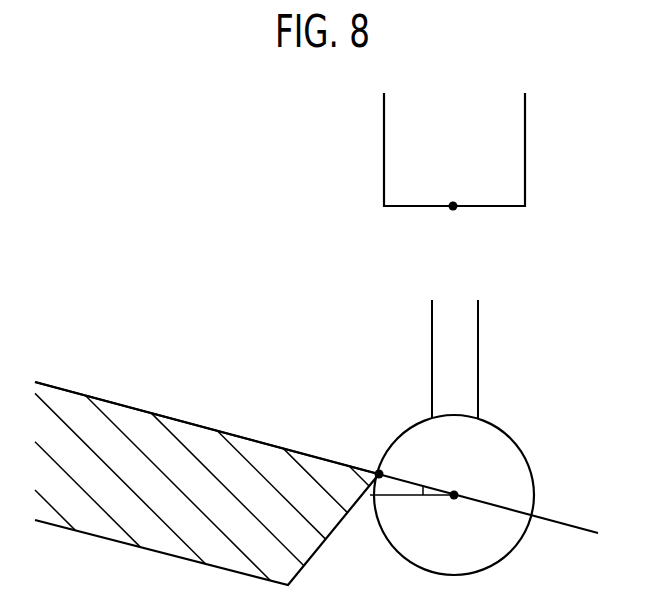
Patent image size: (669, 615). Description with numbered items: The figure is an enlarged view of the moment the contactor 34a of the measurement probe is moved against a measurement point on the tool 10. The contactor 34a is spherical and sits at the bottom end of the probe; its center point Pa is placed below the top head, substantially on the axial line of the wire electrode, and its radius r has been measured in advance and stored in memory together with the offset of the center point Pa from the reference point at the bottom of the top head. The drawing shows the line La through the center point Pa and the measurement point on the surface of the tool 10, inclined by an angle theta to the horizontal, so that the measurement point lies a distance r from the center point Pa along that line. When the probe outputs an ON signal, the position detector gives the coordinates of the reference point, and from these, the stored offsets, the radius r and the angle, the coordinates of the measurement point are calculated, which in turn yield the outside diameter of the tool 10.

The tool 10 is at (133, 408).
The contactor 34a is at (505, 558).
The line through tool center and contact point La is at (586, 508).
The center point of the contactor Pa is at (456, 495).
The radius of the contactor r is at (451, 489).